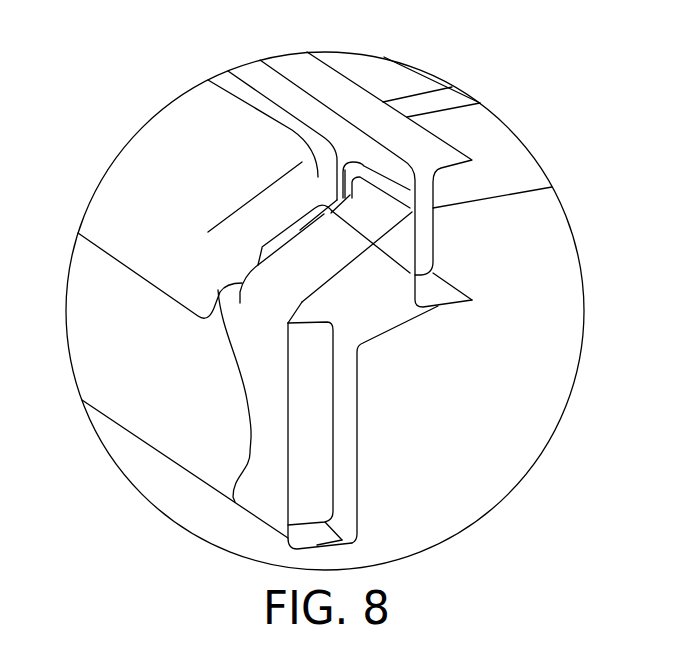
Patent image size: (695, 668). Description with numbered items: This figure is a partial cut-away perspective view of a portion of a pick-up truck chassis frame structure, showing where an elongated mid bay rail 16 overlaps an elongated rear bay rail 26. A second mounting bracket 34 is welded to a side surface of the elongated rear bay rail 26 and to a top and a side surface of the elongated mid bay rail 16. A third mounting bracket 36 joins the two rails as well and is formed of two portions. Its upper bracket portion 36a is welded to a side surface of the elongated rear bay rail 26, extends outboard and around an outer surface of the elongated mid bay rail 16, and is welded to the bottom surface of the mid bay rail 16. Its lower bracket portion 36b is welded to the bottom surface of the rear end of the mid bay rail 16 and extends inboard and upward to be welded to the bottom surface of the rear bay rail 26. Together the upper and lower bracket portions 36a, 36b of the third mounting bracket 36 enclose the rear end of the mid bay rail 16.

The elongated mid bay rail 16 is at (97, 355).
The elongated rear bay rail 26 is at (353, 90).
The second mounting bracket 34 is at (148, 167).
The third mounting bracket 36 is at (256, 404).
The upper bracket portion 36a is at (270, 492).
The lower bracket portion 36b is at (357, 477).